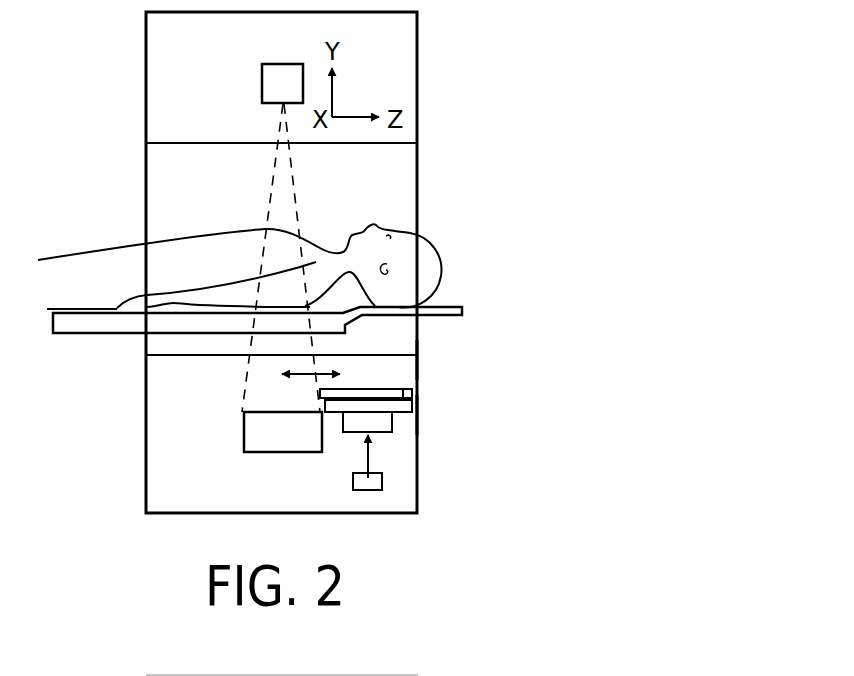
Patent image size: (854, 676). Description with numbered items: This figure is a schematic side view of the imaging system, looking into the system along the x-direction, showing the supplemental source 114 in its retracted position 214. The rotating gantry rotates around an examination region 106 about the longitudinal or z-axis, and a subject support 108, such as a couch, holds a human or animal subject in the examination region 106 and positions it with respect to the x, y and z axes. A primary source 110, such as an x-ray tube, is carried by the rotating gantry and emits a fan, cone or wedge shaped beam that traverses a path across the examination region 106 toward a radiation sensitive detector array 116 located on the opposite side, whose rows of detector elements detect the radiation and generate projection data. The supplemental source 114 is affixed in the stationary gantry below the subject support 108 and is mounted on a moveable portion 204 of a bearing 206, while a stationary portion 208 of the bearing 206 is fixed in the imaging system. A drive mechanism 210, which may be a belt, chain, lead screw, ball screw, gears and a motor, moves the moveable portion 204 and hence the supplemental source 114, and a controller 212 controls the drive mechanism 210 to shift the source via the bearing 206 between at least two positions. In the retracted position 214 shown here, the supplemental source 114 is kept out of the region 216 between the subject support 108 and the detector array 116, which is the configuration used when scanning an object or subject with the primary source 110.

The examination region 106 is at (367, 200).
The subject support 108 is at (119, 334).
The primary source 110 is at (262, 80).
The supplemental source 114 is at (372, 388).
The radiation sensitive detector array 116 is at (263, 460).
The moveable portion 204 is at (412, 393).
The bearing 206 is at (422, 417).
The stationary portion 208 is at (398, 410).
The drive mechanism 210 is at (383, 432).
The controller 212 is at (353, 481).
The retracted position 214 is at (419, 359).
The region 216 is at (256, 381).